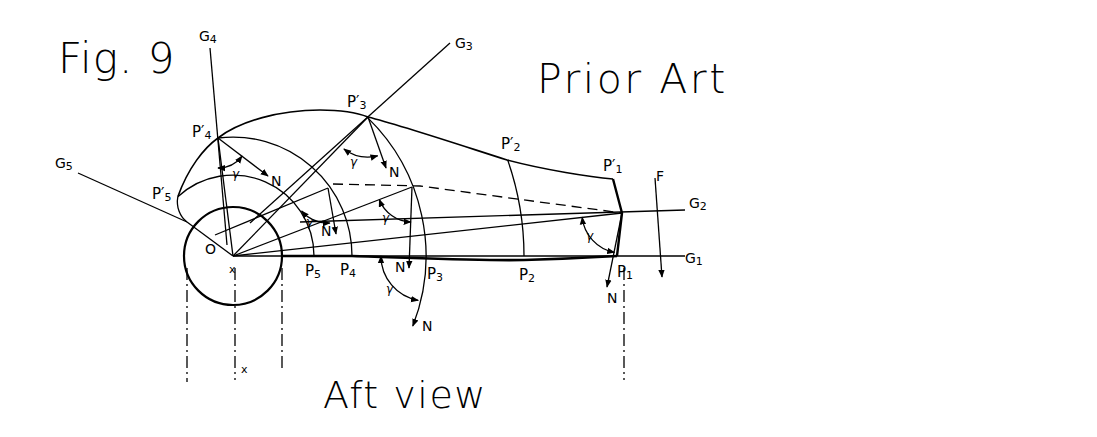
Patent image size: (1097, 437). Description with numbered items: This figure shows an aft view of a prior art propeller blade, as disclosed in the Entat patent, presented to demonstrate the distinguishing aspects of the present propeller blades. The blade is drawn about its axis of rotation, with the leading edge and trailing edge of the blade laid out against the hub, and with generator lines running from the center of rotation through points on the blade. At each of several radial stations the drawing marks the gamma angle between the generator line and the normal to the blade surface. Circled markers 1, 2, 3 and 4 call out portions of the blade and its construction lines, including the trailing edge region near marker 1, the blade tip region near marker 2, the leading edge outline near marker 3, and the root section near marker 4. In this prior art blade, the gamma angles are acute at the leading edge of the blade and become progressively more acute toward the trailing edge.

The trailing edge line 1 is at (440, 262).
The blade tip 2 is at (622, 213).
The leading edge outline 3 is at (240, 176).
The root section pitch line 4 is at (187, 205).